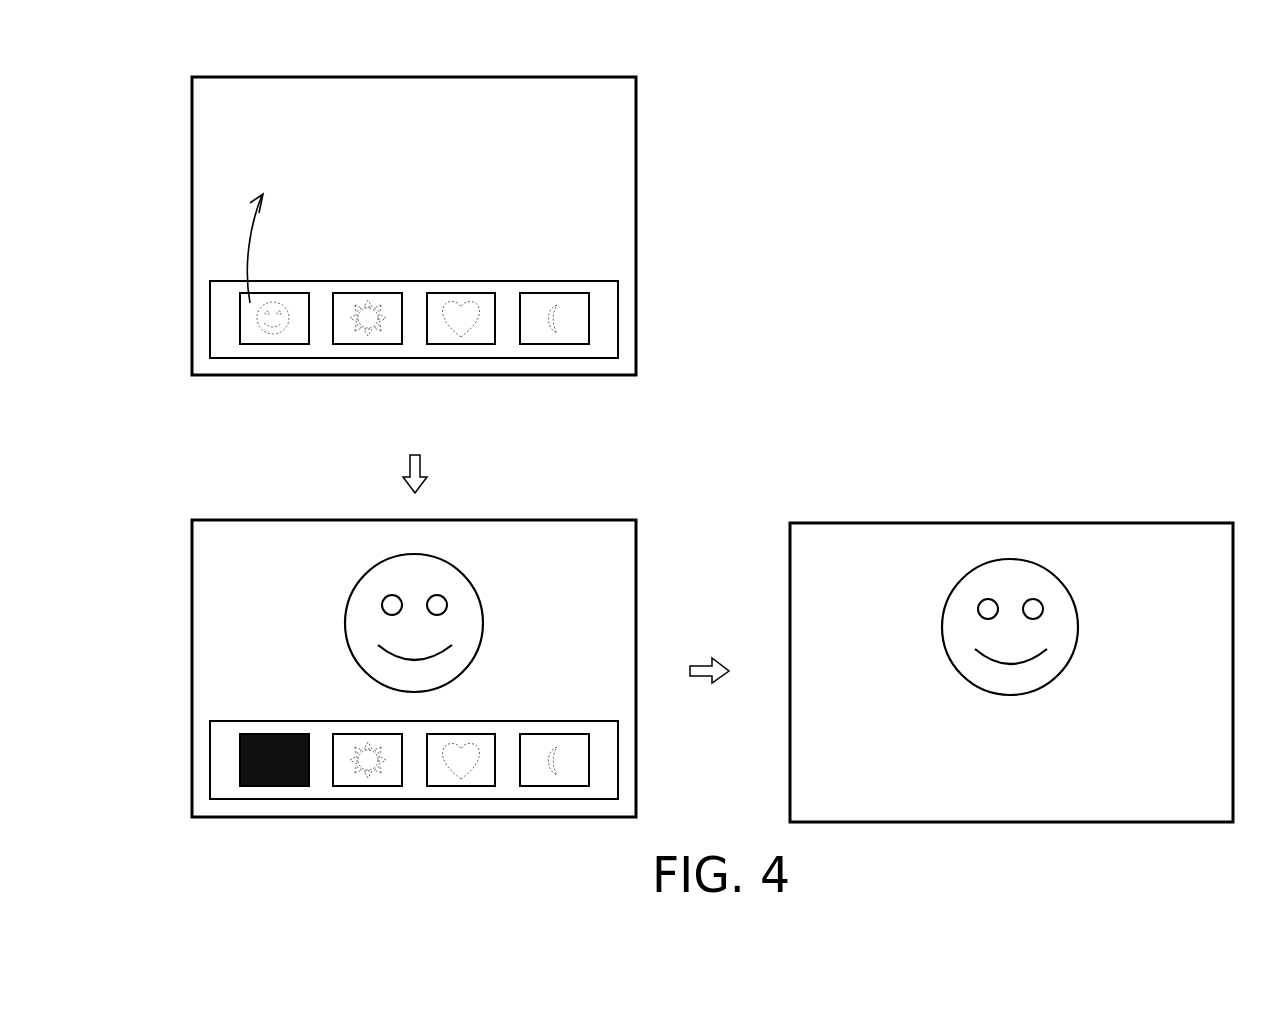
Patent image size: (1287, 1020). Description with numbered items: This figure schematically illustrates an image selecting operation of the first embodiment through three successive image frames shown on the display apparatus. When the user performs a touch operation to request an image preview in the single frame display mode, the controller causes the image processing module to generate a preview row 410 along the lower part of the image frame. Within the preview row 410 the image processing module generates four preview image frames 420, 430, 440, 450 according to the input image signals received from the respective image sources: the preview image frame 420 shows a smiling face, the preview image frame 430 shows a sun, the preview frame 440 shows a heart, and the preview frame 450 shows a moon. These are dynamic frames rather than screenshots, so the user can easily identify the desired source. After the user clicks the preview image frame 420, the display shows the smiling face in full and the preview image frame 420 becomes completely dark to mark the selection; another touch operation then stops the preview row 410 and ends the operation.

The preview row 410 is at (618, 322).
The preview image frame 420 is at (275, 344).
The preview image frame 430 is at (368, 344).
The preview image frame 440 is at (462, 344).
The preview image frame 450 is at (555, 344).